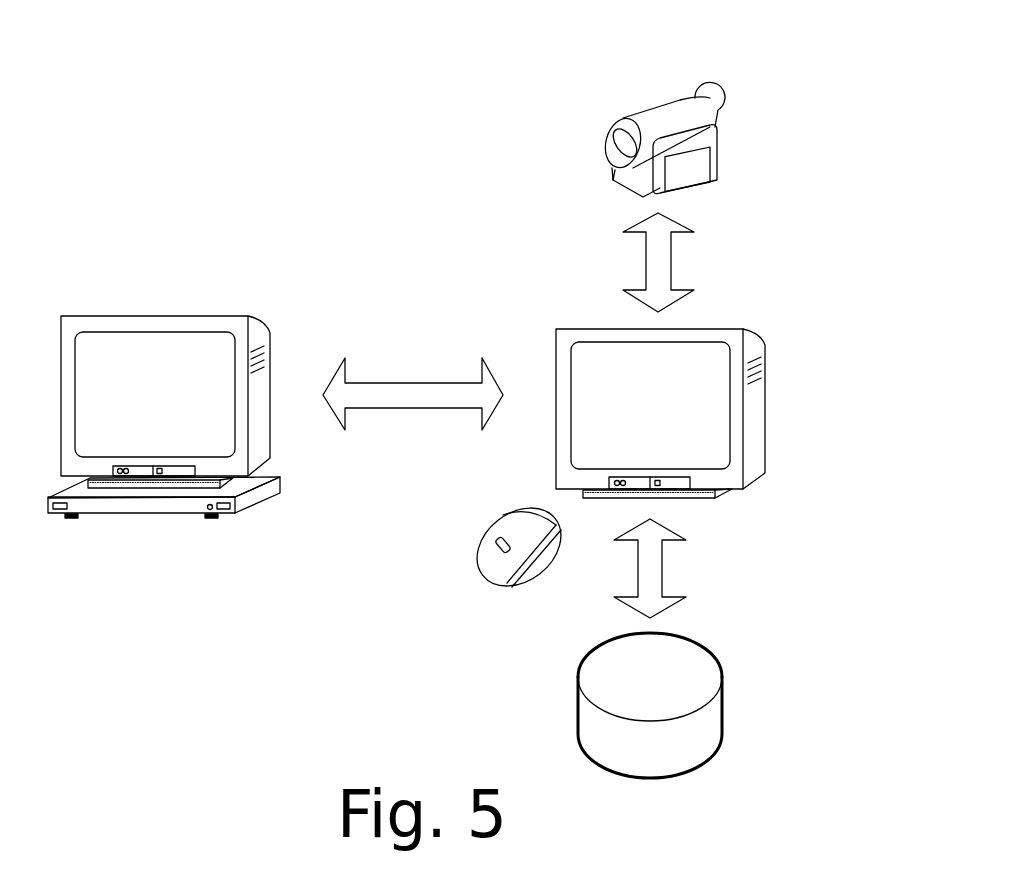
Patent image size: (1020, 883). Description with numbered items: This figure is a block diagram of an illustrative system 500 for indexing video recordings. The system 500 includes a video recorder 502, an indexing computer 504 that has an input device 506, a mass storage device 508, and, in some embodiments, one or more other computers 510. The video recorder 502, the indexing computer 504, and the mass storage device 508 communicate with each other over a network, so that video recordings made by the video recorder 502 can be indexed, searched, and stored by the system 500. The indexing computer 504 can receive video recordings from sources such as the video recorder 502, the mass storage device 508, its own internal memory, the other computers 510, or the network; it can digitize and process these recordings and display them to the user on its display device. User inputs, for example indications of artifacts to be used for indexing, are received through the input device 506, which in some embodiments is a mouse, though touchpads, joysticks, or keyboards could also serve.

The system 500 is at (300, 178).
The video recorder 502 is at (705, 100).
The indexing computer 504 is at (558, 327).
The input device 506 is at (480, 573).
The mass storage device 508 is at (703, 652).
The other computers 510 is at (200, 316).